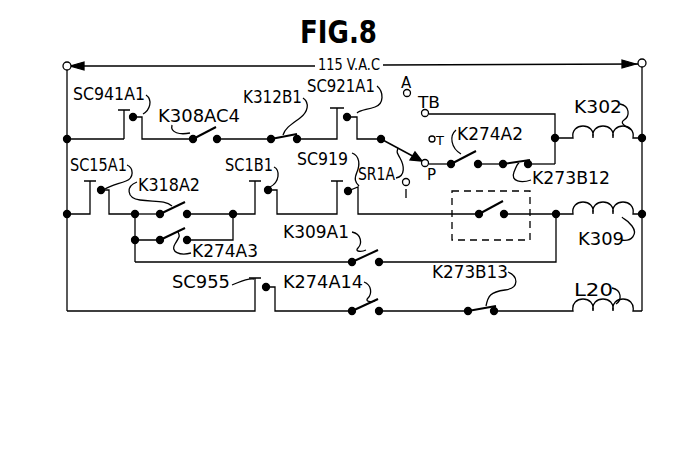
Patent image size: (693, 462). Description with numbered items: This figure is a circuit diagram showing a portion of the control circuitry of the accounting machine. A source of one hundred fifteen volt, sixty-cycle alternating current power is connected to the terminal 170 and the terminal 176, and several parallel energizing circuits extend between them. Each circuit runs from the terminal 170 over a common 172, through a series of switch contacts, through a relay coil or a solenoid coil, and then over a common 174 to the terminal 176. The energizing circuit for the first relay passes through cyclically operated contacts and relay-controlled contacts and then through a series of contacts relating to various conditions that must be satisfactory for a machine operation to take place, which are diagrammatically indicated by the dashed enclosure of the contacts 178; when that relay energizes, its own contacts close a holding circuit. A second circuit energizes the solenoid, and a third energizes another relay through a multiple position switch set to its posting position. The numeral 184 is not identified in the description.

The terminal 170 is at (66, 62).
The common 172 is at (66, 118).
The common 174 is at (642, 108).
The terminal 176 is at (642, 59).
The contacts 178 is at (500, 212).
The supply bus conductor 184 is at (33, 190).